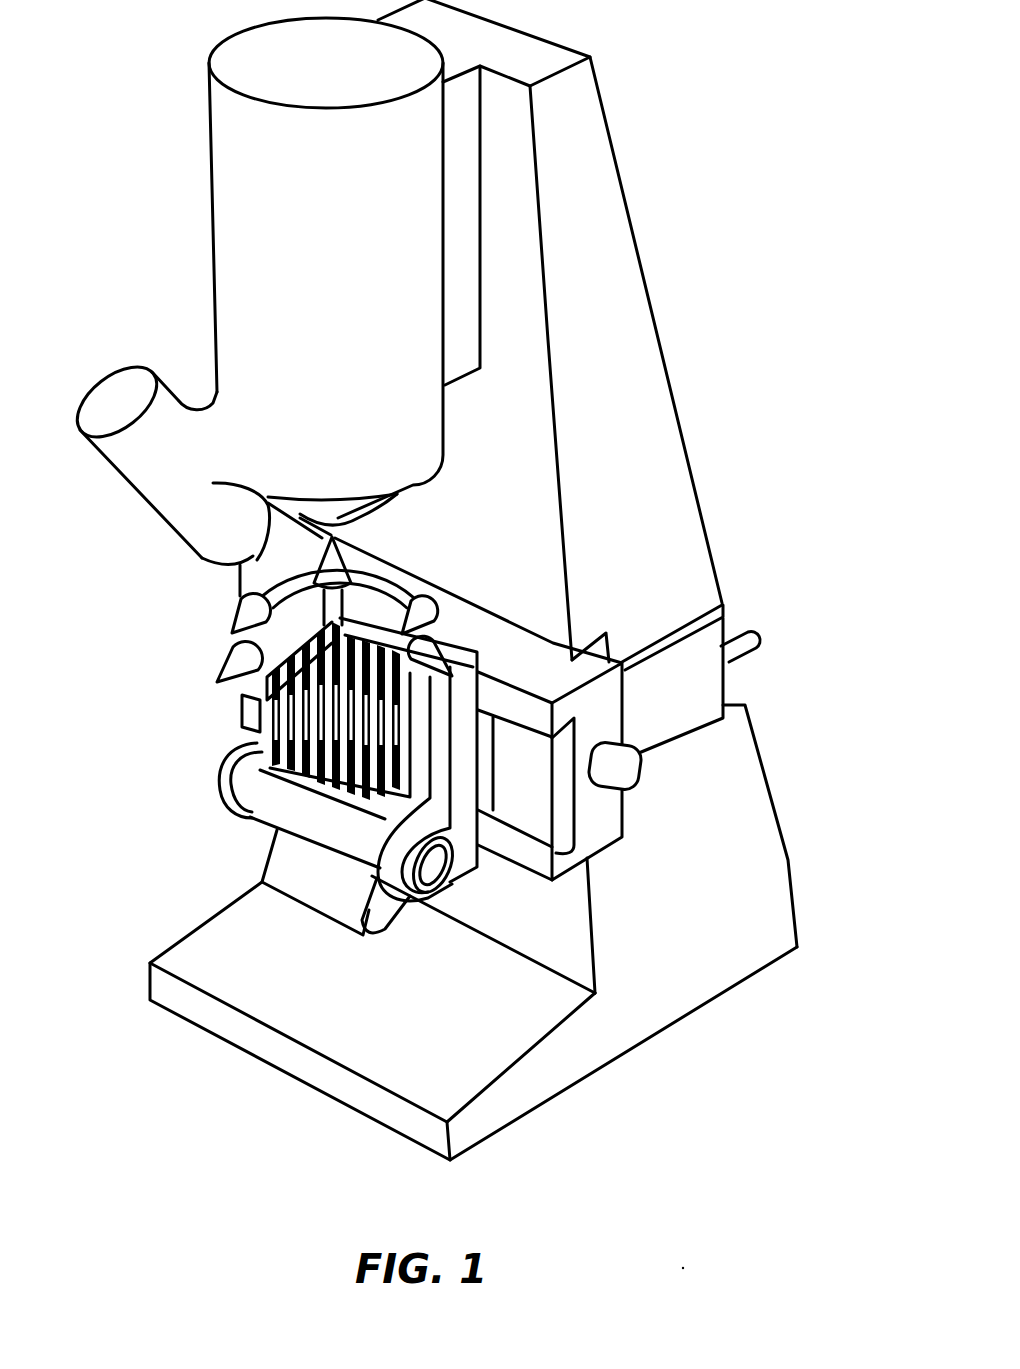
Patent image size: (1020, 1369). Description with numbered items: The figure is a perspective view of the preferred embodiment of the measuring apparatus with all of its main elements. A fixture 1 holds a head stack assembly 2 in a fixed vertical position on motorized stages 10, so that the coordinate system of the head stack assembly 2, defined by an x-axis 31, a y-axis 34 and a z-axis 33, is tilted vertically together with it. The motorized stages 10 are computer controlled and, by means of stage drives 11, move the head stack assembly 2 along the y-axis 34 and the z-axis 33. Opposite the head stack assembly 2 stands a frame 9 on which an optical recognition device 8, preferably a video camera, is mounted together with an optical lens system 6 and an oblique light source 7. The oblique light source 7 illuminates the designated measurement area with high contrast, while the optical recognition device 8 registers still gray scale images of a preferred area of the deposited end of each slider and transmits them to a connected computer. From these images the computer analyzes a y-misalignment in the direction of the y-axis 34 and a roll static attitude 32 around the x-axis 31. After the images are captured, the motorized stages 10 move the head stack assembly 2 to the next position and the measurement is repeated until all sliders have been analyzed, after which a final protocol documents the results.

The fixture 1 is at (460, 822).
The head stack assembly 2 is at (280, 820).
The optical lens system 6 is at (333, 533).
The oblique light source 7 is at (242, 548).
The optical recognition device 8 is at (247, 198).
The frame 9 is at (613, 243).
The motorized stages 10 is at (602, 838).
The stage drives 11 is at (620, 777).
The x-axis 31 is at (220, 561).
The roll static attitude 32 is at (237, 608).
The z-axis 33 is at (265, 738).
The y-axis 34 is at (243, 670).